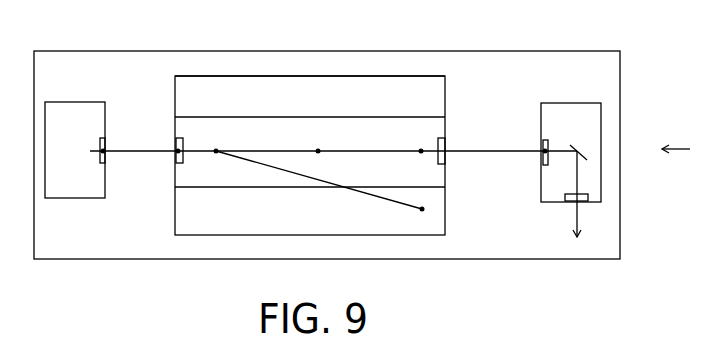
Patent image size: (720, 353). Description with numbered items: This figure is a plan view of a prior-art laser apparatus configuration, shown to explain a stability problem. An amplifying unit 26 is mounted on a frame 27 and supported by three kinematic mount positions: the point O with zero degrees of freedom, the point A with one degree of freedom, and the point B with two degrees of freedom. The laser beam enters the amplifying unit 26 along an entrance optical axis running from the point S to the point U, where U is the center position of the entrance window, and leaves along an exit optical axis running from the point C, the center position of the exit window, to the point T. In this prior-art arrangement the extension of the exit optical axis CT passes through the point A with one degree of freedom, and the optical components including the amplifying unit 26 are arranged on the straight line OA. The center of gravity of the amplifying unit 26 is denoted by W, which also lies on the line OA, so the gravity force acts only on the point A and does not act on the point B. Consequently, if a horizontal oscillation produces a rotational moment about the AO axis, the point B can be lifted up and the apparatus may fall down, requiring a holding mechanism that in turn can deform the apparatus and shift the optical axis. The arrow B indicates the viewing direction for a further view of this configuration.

The amplifying unit 26 is at (363, 125).
The frame 27 is at (208, 88).
The entrance optical axis start point S is at (108, 149).
The center position of window U is at (185, 149).
The position with the 0 DOF O is at (316, 179).
The center of gravity of the amplifying unit W is at (329, 143).
The position with the 1 DOF A is at (425, 142).
The position with the 2 DOF B is at (547, 175).
The center position of window C is at (449, 159).
The exit optical axis end point T is at (536, 151).